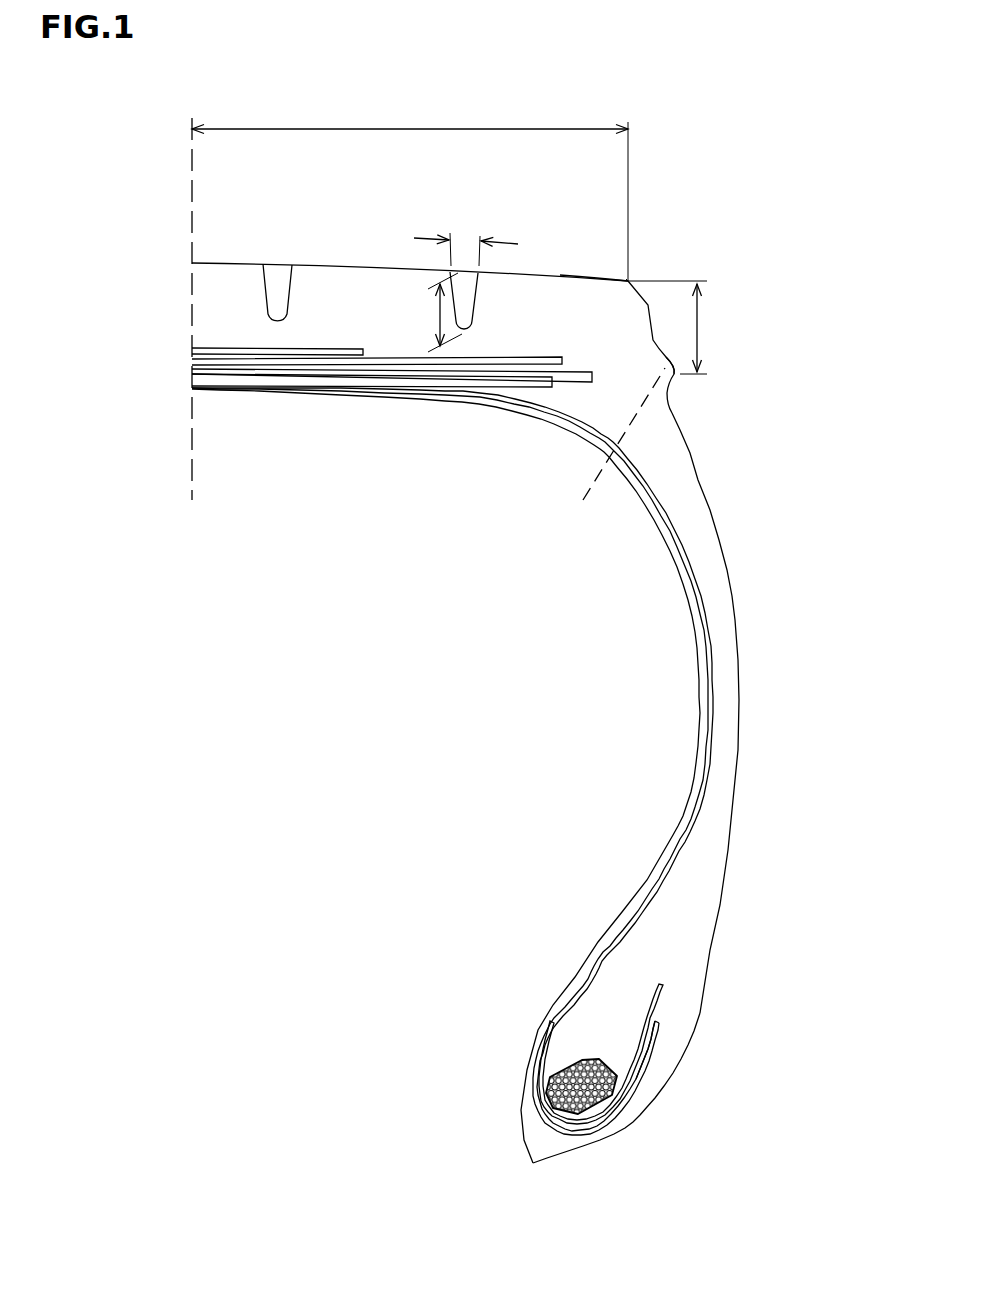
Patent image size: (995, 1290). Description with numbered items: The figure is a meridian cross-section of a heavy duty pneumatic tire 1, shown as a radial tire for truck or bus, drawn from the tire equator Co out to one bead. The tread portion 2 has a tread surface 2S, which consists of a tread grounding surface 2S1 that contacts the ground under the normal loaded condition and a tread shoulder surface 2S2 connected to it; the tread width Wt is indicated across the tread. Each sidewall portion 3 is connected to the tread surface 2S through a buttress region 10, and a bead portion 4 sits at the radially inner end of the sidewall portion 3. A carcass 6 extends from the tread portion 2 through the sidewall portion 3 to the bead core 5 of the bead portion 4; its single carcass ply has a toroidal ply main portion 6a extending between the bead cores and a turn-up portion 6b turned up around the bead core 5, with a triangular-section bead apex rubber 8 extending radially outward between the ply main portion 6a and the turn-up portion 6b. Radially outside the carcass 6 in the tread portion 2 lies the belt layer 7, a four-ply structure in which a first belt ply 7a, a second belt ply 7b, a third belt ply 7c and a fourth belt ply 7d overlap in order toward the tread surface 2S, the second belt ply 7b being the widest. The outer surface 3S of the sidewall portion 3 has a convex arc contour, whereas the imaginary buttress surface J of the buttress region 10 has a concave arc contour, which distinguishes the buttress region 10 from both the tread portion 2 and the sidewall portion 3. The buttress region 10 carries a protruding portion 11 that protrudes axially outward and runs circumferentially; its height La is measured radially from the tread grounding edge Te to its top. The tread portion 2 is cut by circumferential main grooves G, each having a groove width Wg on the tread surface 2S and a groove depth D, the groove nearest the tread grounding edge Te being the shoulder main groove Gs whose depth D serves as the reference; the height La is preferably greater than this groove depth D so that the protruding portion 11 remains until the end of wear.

The heavy duty pneumatic tire 1 is at (157, 240).
The tread portion 2 is at (410, 245).
The tread surface 2S is at (691, 258).
The tread grounding surface 2S1 is at (572, 272).
The tread shoulder surface 2S2 is at (650, 302).
The sidewall portion 3 is at (764, 713).
The sidewall outer surface 3S is at (730, 578).
The bead portion 4 is at (730, 1034).
The bead core 5 is at (580, 1090).
The carcass 6 is at (452, 761).
The ply main portion 6a is at (587, 978).
The turn-up portion 6b is at (657, 998).
The belt layer 7 is at (321, 356).
The first belt ply 7a is at (323, 404).
The second belt ply 7b is at (192, 370).
The third belt ply 7c is at (192, 361).
The fourth belt ply 7d is at (192, 351).
The bead apex rubber 8 is at (663, 908).
The buttress region 10 is at (720, 305).
The protruding portion 11 is at (665, 390).
The circumferential main groove G is at (278, 312).
The shoulder main groove Gs is at (462, 320).
The groove width Wg is at (466, 235).
The groove depth D is at (433, 290).
The tread width Wt is at (410, 189).
The tread grounding edge Te is at (629, 281).
The height of the protruding portion La is at (700, 301).
The tire equator Co is at (192, 327).
The imaginary buttress surface J is at (618, 450).